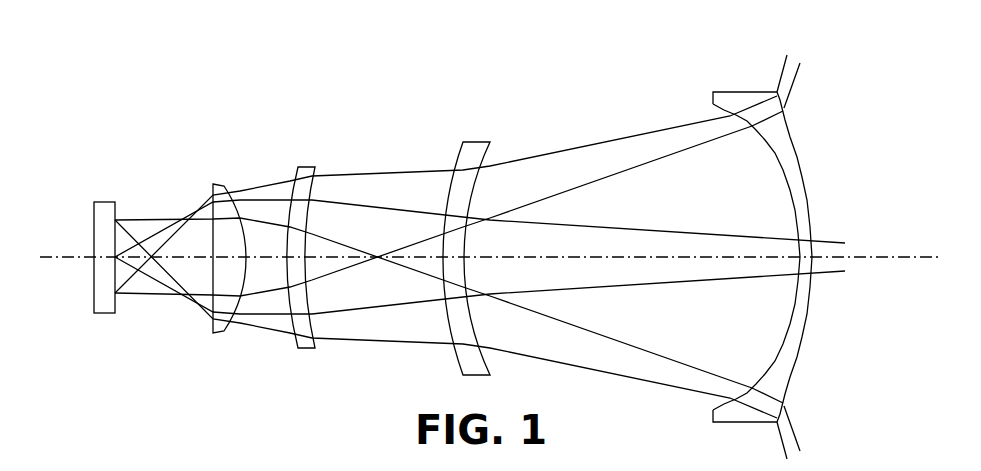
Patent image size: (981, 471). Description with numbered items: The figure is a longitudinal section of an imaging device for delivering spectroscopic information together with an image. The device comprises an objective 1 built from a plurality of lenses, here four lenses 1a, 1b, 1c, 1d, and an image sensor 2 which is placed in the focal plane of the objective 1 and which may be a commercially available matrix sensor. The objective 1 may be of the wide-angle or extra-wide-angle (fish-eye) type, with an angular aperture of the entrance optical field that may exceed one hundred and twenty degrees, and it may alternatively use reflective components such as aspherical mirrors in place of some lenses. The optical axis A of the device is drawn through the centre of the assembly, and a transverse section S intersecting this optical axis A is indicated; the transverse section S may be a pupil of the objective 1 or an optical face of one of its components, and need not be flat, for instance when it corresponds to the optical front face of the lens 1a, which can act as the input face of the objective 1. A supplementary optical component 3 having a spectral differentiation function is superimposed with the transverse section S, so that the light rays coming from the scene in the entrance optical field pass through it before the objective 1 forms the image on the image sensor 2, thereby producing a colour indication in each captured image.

The objective 1 is at (822, 56).
The lens 1a is at (713, 92).
The lens 1b is at (475, 142).
The lens 1c is at (307, 167).
The lens 1d is at (218, 184).
The image sensor 2 is at (107, 202).
The optical component having a spectral differentiation function 3 is at (800, 363).
The transverse section S is at (808, 142).
The optical axis A is at (60, 253).